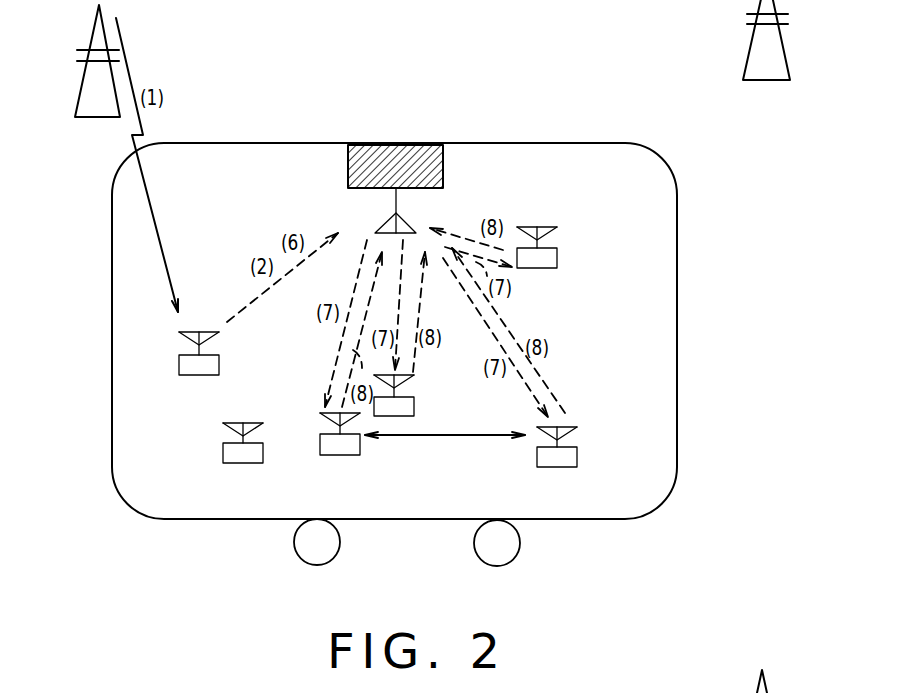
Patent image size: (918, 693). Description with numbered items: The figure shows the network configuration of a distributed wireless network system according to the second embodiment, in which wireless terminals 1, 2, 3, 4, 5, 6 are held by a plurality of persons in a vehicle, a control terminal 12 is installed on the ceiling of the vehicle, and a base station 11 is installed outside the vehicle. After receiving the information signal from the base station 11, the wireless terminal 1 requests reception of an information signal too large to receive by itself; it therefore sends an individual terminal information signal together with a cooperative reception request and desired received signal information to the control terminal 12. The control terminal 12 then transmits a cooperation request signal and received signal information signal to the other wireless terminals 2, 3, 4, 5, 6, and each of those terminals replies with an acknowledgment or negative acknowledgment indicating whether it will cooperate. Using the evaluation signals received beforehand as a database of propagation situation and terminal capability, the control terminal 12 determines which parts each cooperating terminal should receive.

The wireless terminal 1 is at (190, 367).
The wireless terminal 2 is at (232, 450).
The wireless terminal 3 is at (326, 447).
The wireless terminal 4 is at (407, 408).
The wireless terminal 5 is at (572, 456).
The wireless terminal 6 is at (553, 262).
The base station 11 is at (98, 118).
The control terminal 12 is at (415, 163).